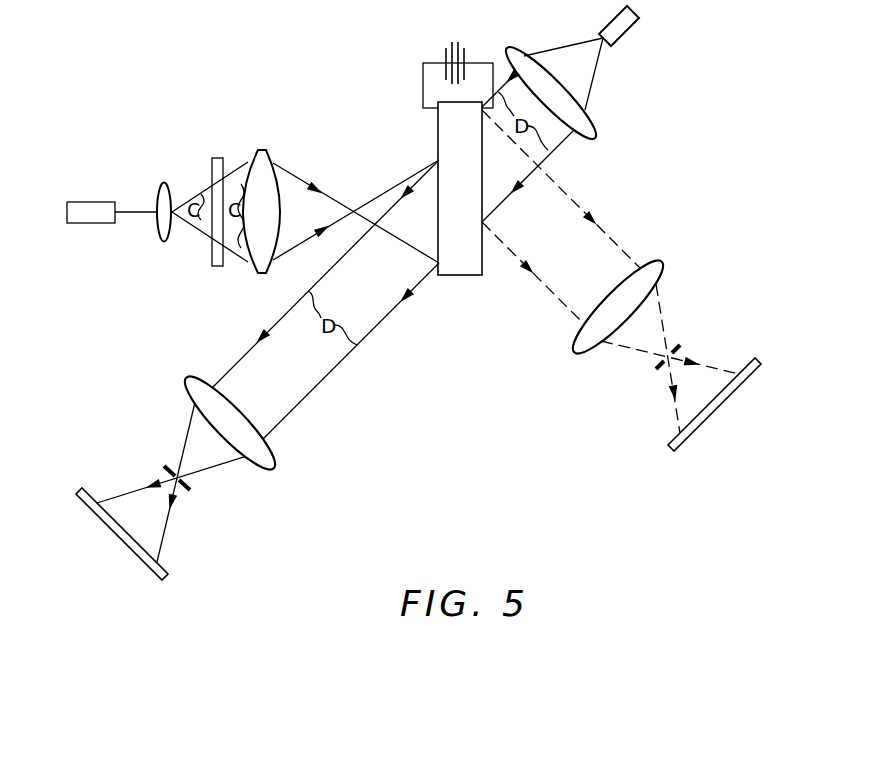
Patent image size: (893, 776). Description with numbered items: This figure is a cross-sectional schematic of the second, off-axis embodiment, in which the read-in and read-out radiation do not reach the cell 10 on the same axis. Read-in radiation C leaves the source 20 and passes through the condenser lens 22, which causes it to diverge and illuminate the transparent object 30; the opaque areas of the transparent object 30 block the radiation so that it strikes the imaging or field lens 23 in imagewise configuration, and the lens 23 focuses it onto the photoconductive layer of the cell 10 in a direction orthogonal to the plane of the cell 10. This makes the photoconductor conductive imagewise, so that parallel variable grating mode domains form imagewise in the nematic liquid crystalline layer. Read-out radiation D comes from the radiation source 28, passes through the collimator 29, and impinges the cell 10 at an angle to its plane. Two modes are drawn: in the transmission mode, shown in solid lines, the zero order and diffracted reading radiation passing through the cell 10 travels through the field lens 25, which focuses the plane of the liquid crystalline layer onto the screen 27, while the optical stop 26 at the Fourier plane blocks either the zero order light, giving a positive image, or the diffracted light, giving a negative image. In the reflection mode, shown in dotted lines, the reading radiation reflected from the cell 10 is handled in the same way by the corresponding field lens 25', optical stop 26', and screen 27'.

The parallel variable grating mode cell 10 is at (425, 120).
The source of exposing illumination 20 is at (94, 202).
The condenser lens 22 is at (167, 184).
The imaging or field lens 23 is at (273, 156).
The field lens 25 is at (211, 464).
The optical stop 26 is at (201, 485).
The screen 27 is at (122, 534).
The radiation source 28 is at (636, 29).
The collimator 29 is at (527, 50).
The transparent object 30 is at (219, 158).
The field lens 25' is at (651, 336).
The optical stop 26' is at (695, 342).
The screen 27' is at (732, 404).